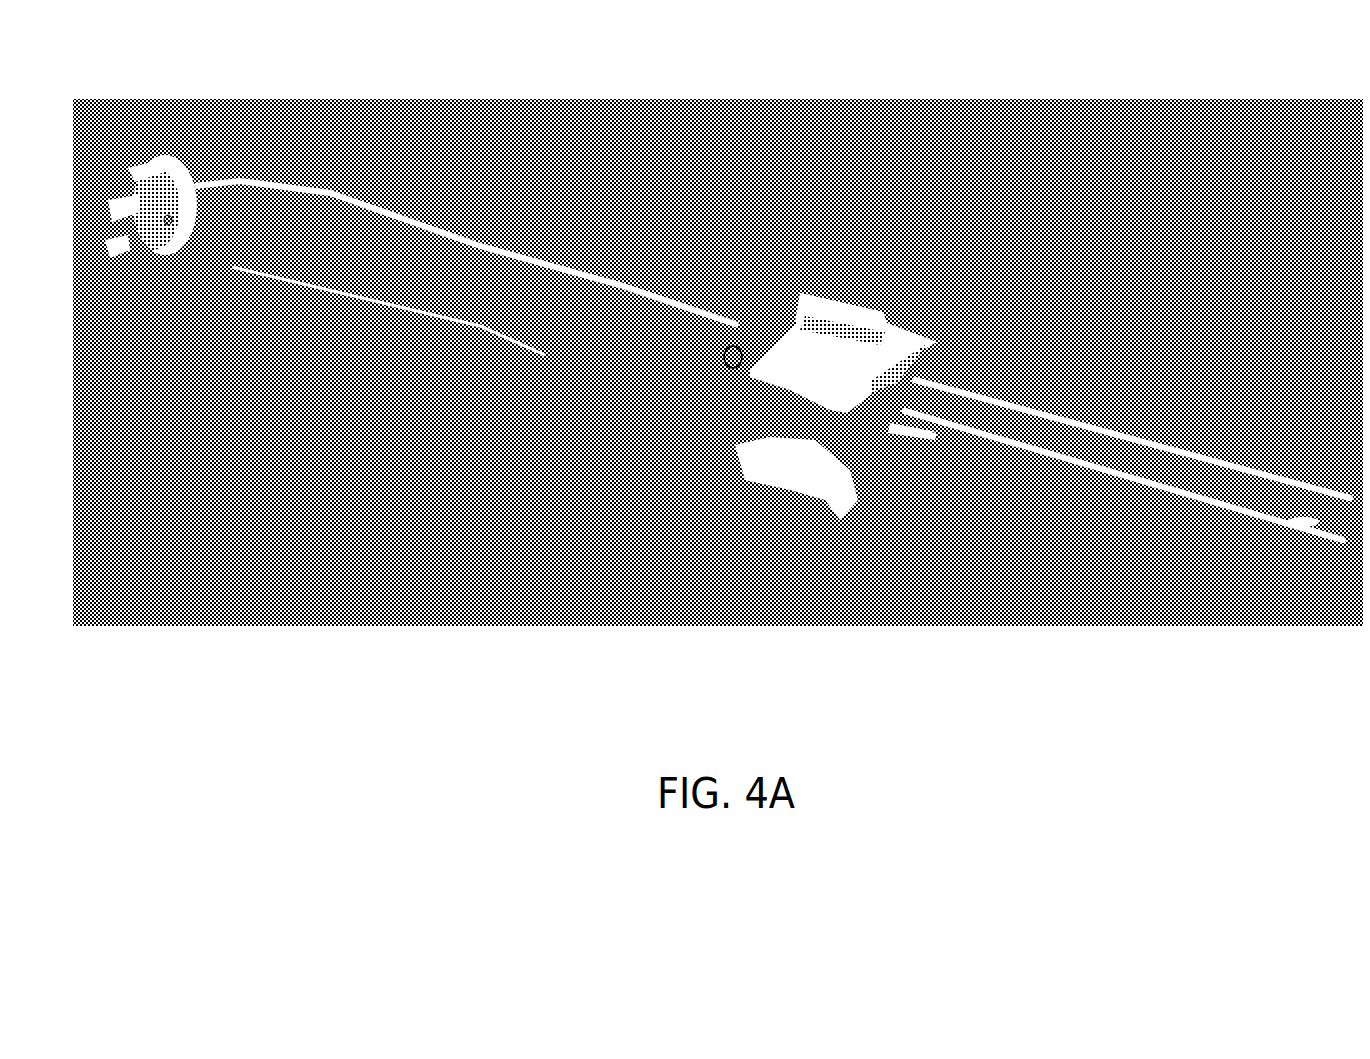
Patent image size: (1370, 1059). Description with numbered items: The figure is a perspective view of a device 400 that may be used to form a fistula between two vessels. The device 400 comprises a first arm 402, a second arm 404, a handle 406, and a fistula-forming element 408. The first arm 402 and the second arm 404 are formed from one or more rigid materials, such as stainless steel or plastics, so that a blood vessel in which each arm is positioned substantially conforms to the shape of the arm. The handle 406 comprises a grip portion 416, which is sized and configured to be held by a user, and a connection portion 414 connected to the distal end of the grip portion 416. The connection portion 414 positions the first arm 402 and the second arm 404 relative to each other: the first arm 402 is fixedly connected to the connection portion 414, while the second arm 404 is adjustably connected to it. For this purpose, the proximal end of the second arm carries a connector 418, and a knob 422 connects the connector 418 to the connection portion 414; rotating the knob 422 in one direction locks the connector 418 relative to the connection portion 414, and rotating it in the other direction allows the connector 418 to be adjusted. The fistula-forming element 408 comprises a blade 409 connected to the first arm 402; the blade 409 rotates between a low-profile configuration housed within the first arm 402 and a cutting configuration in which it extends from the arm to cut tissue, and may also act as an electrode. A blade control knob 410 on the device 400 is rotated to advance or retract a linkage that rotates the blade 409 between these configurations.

The device 400 is at (968, 640).
The first arm 402 is at (1127, 487).
The second arm 404 is at (1135, 433).
The handle 406 is at (457, 415).
The fistula-forming element 408 is at (1287, 562).
The blade 409 is at (1312, 522).
The blade control knob 410 is at (117, 275).
The connection portion 414 is at (880, 507).
The grip portion 416 is at (608, 307).
The connector 418 is at (835, 307).
The knob 422 is at (753, 513).